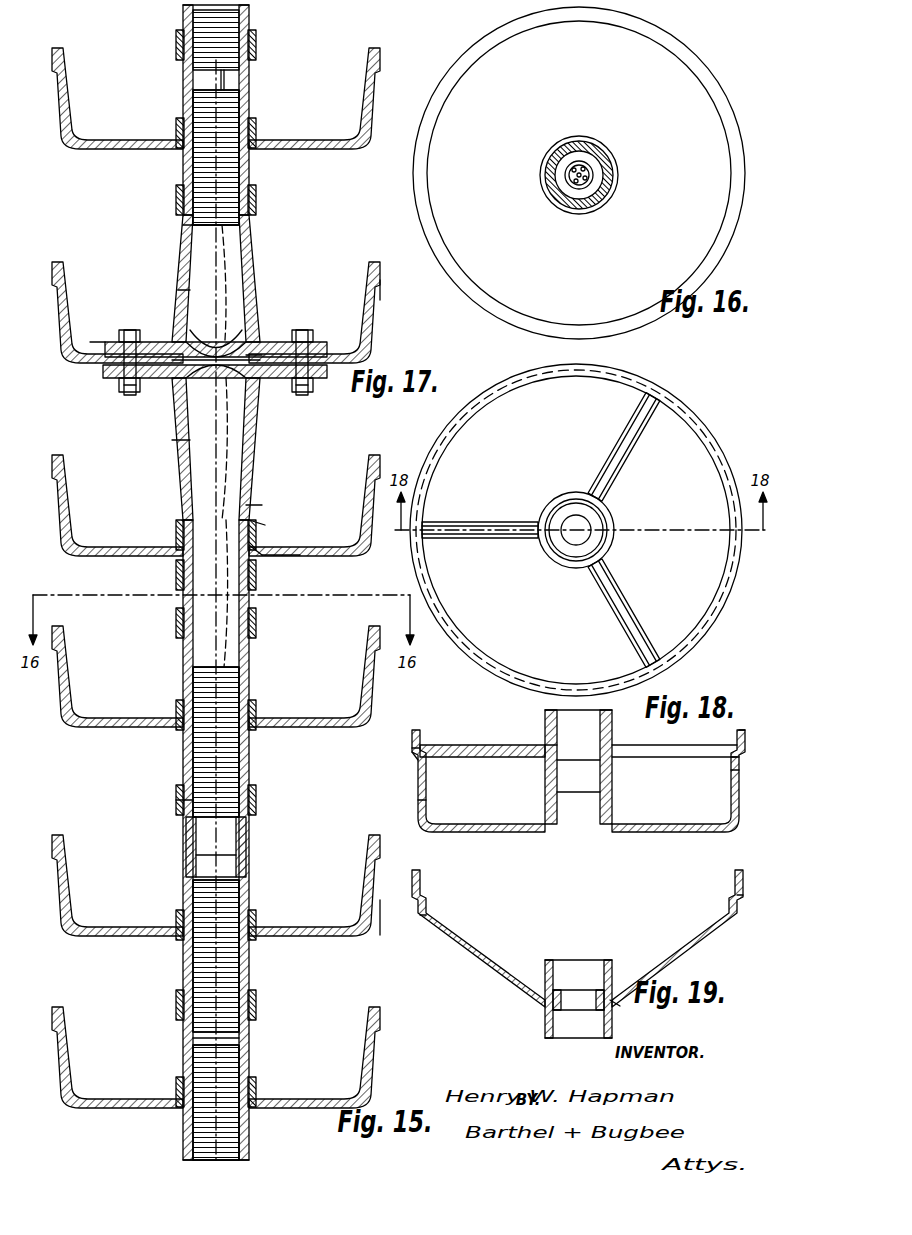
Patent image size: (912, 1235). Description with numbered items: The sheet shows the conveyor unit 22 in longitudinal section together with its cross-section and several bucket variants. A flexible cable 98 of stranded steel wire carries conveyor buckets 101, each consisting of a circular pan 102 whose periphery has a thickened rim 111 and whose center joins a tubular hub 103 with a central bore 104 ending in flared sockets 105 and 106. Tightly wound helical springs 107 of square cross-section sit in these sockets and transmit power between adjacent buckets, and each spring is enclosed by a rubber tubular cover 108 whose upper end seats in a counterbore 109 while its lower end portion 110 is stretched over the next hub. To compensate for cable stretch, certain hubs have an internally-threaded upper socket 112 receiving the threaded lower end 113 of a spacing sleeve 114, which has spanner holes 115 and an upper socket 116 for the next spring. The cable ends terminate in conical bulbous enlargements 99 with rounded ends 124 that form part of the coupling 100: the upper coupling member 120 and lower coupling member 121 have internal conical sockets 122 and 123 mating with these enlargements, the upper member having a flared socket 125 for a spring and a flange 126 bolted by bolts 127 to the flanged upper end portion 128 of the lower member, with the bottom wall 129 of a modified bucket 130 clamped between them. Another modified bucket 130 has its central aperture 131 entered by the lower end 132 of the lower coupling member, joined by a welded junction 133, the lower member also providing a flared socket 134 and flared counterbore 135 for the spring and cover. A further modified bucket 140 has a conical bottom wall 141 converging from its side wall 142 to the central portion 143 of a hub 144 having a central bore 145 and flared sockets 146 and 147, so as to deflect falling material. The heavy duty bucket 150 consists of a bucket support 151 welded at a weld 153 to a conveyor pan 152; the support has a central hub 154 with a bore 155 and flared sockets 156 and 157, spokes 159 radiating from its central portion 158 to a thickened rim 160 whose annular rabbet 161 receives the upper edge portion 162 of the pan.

In FIG. 15, the conveyor unit 22 is at (258, 232).
In FIG. 15, the flexible cable 98 is at (230, 78).
In FIG. 16, the flexible cable 98 is at (595, 170).
In FIG. 15, the conical bulbous enlargements 99 is at (216, 377).
In FIG. 15, the coupling 100 is at (265, 413).
In FIG. 15, the conveyor bucket 101 is at (322, 150).
In FIG. 16, the conveyor bucket 101 is at (700, 105).
In FIG. 15, the pan 102 is at (333, 938).
In FIG. 15, the tubular hub 103 is at (183, 80).
In FIG. 15, the central bore 104 is at (195, 1040).
In FIG. 15, the lower flared socket 105 is at (240, 110).
In FIG. 15, the upper flared socket 106 is at (258, 650).
In FIG. 15, the helical spring 107 is at (225, 22).
In FIG. 16, the helical spring 107 is at (570, 150).
In FIG. 15, the tubular cover 108 is at (253, 590).
In FIG. 16, the tubular cover 108 is at (568, 208).
In FIG. 15, the counterbore 109 is at (248, 130).
In FIG. 15, the stretched end portion 110 is at (176, 205).
In FIG. 16, the rim 111 is at (740, 190).
In FIG. 15, the internally-threaded upper socket 112 is at (246, 853).
In FIG. 15, the threaded lower end 113 is at (196, 856).
In FIG. 15, the spacing sleeve 114 is at (186, 818).
In FIG. 15, the spanner holes 115 is at (178, 800).
In FIG. 15, the socket 116 is at (246, 820).
In FIG. 15, the upper coupling member 120 is at (255, 272).
In FIG. 15, the lower coupling member 121 is at (262, 440).
In FIG. 15, the conical socket 122 is at (185, 292).
In FIG. 15, the conical socket 123 is at (186, 440).
In FIG. 15, the rounded ends 124 is at (248, 342).
In FIG. 15, the flared socket 125 is at (184, 233).
In FIG. 15, the flange 126 is at (155, 342).
In FIG. 15, the bolts 127 is at (131, 330).
In FIG. 15, the flanged upper end portion 128 is at (105, 376).
In FIG. 15, the bottom wall 129 is at (90, 352).
In FIG. 15, the modified bucket 130 is at (380, 306).
In FIG. 15, the central aperture 131 is at (260, 355).
In FIG. 15, the lower end 132 is at (263, 556).
In FIG. 15, the welded junction 133 is at (272, 545).
In FIG. 15, the flared socket 134 is at (262, 515).
In FIG. 15, the flared counterbore 135 is at (266, 530).
In FIG. 19, the modified bucket 140 is at (743, 865).
In FIG. 19, the conical bottom wall 141 is at (475, 975).
In FIG. 19, the side wall 142 is at (735, 910).
In FIG. 19, the central portion 143 is at (618, 1000).
In FIG. 19, the hub 144 is at (545, 1023).
In FIG. 19, the central bore 145 is at (590, 992).
In FIG. 19, the upper flared socket 146 is at (553, 965).
In FIG. 19, the lower flared socket 147 is at (553, 1030).
In FIG. 17, the heavy duty bucket 150 is at (742, 600).
In FIG. 18, the heavy duty bucket 150 is at (747, 742).
In FIG. 17, the bucket support 151 is at (445, 597).
In FIG. 18, the bucket support 151 is at (418, 730).
In FIG. 18, the conveyor pan 152 is at (418, 812).
In FIG. 18, the weld 153 is at (415, 760).
In FIG. 17, the central hub 154 is at (605, 540).
In FIG. 18, the central hub 154 is at (612, 762).
In FIG. 17, the central bore 155 is at (612, 520).
In FIG. 18, the central bore 155 is at (570, 748).
In FIG. 18, the upper flared socket 156 is at (600, 710).
In FIG. 18, the lower flared socket 157 is at (563, 795).
In FIG. 18, the central portion 158 is at (545, 740).
In FIG. 17, the spokes 159 is at (625, 455).
In FIG. 18, the spokes 159 is at (640, 745).
In FIG. 18, the rim 160 is at (412, 748).
In FIG. 18, the annular rabbet 161 is at (730, 760).
In FIG. 18, the upper edge portion 162 is at (730, 770).